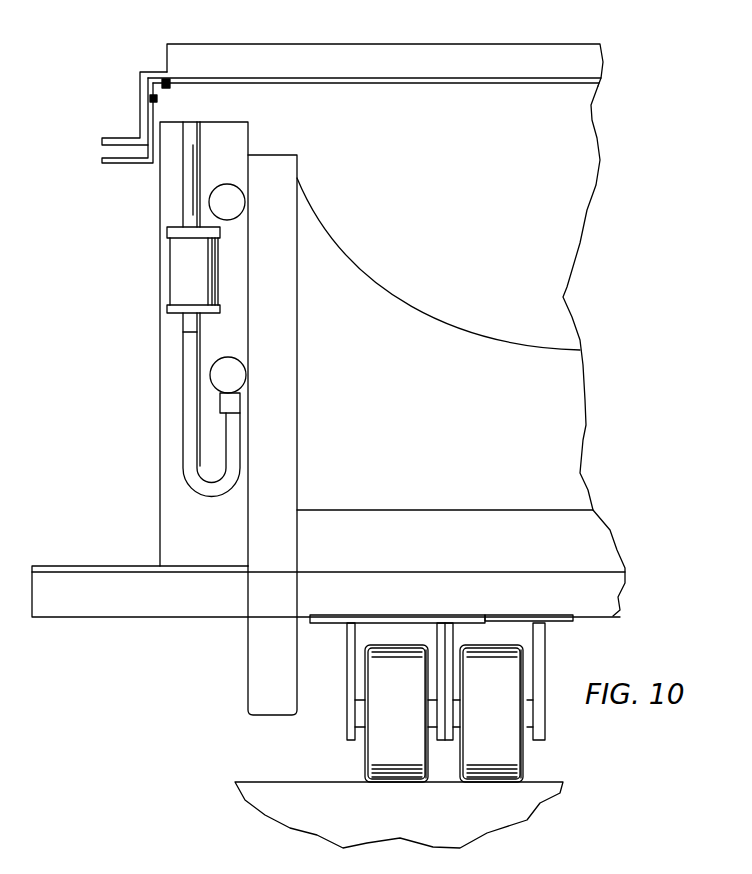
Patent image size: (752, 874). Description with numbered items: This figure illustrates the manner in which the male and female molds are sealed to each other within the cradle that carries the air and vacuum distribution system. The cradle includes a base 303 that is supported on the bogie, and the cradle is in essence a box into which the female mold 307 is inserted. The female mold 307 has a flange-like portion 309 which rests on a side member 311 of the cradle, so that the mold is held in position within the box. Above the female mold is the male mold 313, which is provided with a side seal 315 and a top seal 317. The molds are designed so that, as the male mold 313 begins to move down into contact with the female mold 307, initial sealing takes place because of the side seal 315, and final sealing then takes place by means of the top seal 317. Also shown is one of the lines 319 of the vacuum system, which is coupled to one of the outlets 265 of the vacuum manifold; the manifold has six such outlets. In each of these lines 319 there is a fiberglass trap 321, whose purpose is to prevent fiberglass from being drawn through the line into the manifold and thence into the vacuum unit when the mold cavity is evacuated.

The outlet 265 is at (238, 402).
The base 303 is at (440, 510).
The female mold 307 is at (510, 340).
The flange 309 is at (250, 133).
The side member 311 is at (297, 326).
The male mold 313 is at (462, 43).
The side seal 315 is at (150, 97).
The top seal 317 is at (165, 80).
The line 319 is at (183, 436).
The fiberglass trap 321 is at (173, 277).